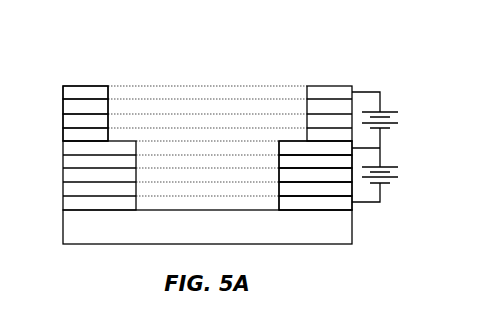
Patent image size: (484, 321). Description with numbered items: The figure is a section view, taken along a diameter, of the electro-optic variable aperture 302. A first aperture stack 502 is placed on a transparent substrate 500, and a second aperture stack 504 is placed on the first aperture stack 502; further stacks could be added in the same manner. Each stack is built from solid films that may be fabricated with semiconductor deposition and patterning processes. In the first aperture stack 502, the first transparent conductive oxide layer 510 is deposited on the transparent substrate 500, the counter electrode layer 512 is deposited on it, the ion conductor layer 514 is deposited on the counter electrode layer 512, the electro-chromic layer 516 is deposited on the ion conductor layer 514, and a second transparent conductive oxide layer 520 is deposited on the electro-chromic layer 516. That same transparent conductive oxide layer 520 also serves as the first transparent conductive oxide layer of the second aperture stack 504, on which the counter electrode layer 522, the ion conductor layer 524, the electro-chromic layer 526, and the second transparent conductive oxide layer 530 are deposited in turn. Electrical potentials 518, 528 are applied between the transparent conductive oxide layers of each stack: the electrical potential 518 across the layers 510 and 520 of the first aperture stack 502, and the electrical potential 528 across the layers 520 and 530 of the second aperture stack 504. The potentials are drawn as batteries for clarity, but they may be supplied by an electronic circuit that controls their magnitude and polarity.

The electro-optic variable aperture 302 is at (40, 75).
The transparent substrate 500 is at (63, 226).
The first aperture stack 502 is at (62, 142).
The second aperture stack 504 is at (58, 86).
The first transparent conductive oxide layer 510 is at (279, 203).
The counter electrode layer 512 is at (279, 189).
The ion conductor layer 514 is at (279, 175).
The electro-chromic layer 516 is at (279, 161).
The electrical potential 518 is at (389, 190).
The first transparent conductive oxide layer 520 is at (279, 148).
The counter electrode layer 522 is at (108, 135).
The ion conductor layer 524 is at (108, 121).
The electro-chromic layer 526 is at (108, 106).
The electrical potential 528 is at (388, 108).
The second transparent conductive oxide layer 530 is at (108, 92).